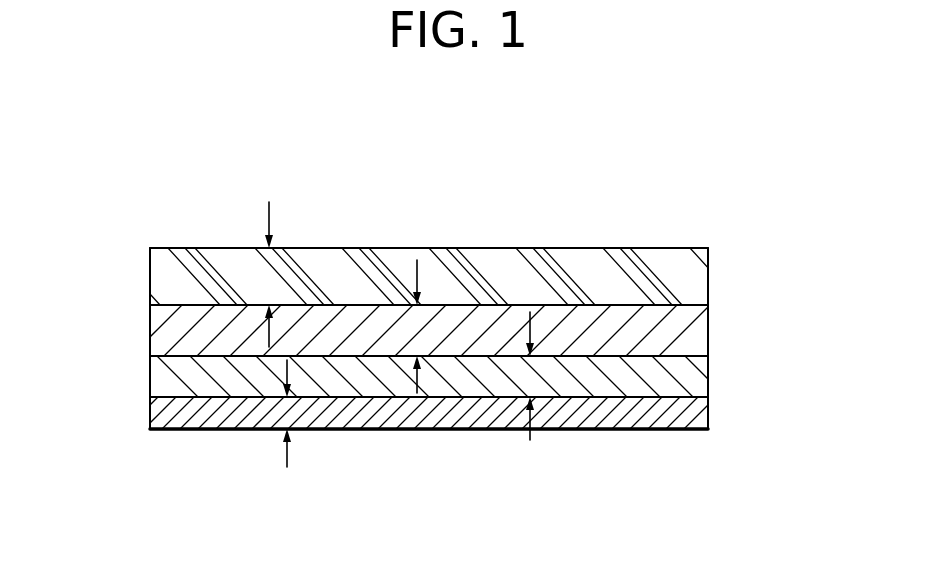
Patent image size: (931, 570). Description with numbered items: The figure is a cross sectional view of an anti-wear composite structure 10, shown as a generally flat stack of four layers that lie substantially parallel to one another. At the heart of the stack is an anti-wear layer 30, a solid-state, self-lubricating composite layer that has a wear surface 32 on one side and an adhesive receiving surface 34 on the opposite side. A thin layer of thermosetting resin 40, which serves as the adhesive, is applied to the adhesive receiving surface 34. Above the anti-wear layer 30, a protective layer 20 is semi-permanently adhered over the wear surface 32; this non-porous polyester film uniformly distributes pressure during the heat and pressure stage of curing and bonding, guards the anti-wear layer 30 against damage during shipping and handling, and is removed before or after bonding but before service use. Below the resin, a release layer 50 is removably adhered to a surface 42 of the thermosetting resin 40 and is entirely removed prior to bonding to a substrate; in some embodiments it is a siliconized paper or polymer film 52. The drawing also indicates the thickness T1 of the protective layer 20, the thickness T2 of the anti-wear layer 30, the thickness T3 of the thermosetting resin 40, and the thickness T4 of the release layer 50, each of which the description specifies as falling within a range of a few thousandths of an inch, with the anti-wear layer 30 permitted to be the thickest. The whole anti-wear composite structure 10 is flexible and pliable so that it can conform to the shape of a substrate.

The anti-wear composite structure 10 is at (688, 142).
The protective layer 20 is at (672, 278).
The anti-wear layer 30 is at (675, 333).
The layer of thermosetting resin 40 is at (690, 380).
The release layer 50 is at (688, 412).
The wear surface 32 is at (168, 304).
The adhesive receiving surface 34 is at (168, 350).
The surface of the thermosetting resin 42 is at (225, 398).
The siliconized paper or polymer film 52 is at (652, 397).
The thickness of the protective layer T1 is at (269, 213).
The thickness of the anti-wear layer T2 is at (417, 270).
The thickness of the thermosetting resin T3 is at (530, 318).
The thickness of the release layer T4 is at (287, 453).